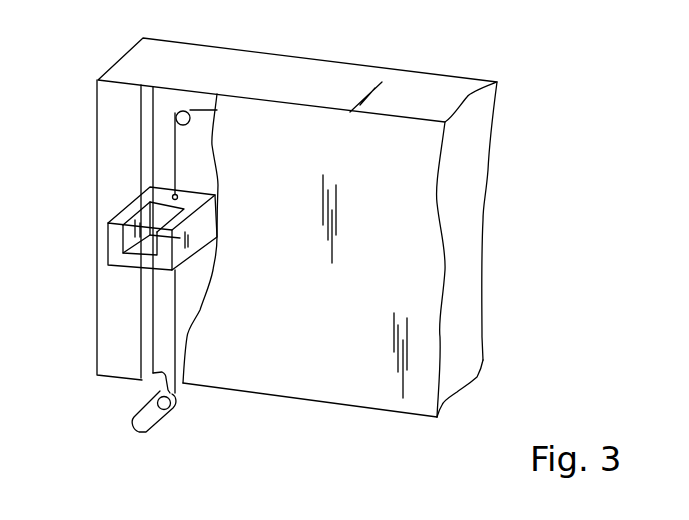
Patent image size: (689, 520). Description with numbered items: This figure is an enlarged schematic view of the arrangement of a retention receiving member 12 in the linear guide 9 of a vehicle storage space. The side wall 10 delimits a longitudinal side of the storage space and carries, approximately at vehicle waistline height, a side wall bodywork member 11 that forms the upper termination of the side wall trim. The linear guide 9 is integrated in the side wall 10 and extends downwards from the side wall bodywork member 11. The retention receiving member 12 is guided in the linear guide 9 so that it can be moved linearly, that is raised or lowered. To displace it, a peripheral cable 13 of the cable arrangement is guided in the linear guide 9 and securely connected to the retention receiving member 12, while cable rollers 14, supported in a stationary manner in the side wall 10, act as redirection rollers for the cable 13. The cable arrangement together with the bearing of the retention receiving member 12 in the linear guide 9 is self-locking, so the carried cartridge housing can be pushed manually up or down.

The linear guide 9 is at (164, 147).
The side wall 10 is at (322, 379).
The side wall bodywork member 11 is at (333, 70).
The retention receiving member 12 is at (115, 243).
The peripheral cable 13 is at (167, 177).
The cable roller 14 is at (189, 122).